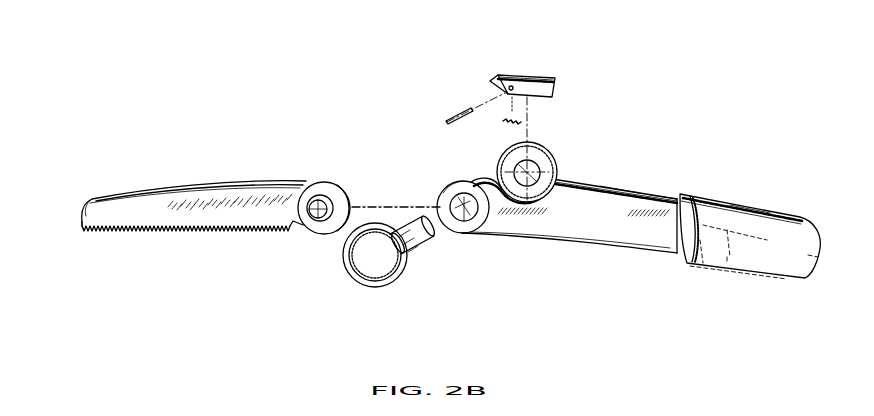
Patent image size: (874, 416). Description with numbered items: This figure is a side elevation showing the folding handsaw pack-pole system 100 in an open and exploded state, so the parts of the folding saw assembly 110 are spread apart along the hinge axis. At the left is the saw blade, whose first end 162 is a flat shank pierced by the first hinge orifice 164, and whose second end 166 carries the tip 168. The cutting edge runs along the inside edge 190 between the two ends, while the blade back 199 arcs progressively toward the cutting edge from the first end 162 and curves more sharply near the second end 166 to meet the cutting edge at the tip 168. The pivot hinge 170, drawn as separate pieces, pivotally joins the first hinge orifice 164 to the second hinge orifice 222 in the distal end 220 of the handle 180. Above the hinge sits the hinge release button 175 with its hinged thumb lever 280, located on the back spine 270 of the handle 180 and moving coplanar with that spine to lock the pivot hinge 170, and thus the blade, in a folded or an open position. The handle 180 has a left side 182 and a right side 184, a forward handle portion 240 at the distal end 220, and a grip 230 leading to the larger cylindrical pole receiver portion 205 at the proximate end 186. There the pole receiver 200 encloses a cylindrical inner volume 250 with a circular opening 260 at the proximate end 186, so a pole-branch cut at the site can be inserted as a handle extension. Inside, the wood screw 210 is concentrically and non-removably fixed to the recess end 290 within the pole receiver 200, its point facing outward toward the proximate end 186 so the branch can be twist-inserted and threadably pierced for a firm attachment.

The folding handsaw pack-pole system 100 is at (640, 33).
The folding saw assembly 110 is at (654, 64).
The first end 162 is at (332, 190).
The first hinge orifice 164 is at (318, 200).
The second end 166 is at (93, 210).
The tip 168 is at (78, 218).
The pivot hinge 170 is at (558, 165).
The hinge release button 175 is at (527, 75).
The handle 180 is at (632, 235).
The left side 182 is at (655, 192).
The right side 184 is at (695, 198).
The proximate end 186 is at (793, 278).
The inside edge 190 is at (192, 220).
The blade back 199 is at (190, 182).
The pole receiver 200 is at (822, 242).
The pole receiver portion 205 is at (747, 212).
The wood screw 210 is at (727, 263).
The distal end 220 is at (443, 196).
The second hinge orifice 222 is at (458, 200).
The grip 230 is at (727, 193).
The forward handle portion 240 is at (567, 223).
The cylindrical inner volume 250 is at (782, 228).
The circular opening 260 is at (820, 262).
The back spine 270 is at (623, 183).
The hinged thumb lever 280 is at (548, 75).
The recess end 290 is at (703, 263).